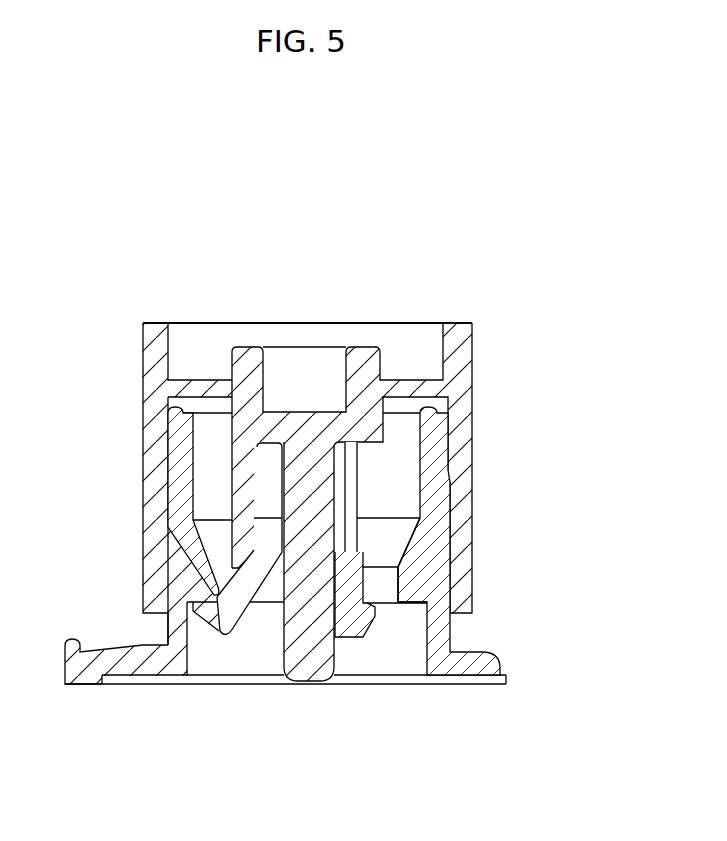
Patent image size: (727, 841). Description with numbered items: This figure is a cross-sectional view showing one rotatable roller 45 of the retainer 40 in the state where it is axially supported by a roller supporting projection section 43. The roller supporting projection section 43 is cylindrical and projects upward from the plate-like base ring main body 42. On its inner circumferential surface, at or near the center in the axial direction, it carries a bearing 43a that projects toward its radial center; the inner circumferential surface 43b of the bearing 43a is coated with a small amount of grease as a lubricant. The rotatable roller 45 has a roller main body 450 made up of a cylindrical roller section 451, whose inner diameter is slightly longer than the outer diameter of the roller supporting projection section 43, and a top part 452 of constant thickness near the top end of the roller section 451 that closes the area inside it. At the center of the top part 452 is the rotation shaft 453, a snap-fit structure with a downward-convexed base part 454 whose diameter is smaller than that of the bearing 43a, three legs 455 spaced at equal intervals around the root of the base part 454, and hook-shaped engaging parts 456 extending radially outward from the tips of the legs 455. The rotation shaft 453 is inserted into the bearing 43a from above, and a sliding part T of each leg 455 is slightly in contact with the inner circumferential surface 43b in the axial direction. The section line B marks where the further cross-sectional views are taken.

The retainer 40 is at (195, 677).
The base ring main body 42 is at (133, 686).
The roller supporting projection section 43 is at (370, 570).
The bearing 43a is at (409, 584).
The inner circumferential surface 43b is at (383, 582).
The rotatable roller 45 is at (290, 450).
The roller main body 450 is at (341, 446).
The roller section 451 is at (475, 319).
The top part 452 is at (423, 388).
The rotation shaft 453 is at (290, 616).
The base part 454 is at (300, 657).
The leg 455 is at (262, 600).
The engaging part 456 is at (393, 748).
The sliding part T is at (216, 595).
The line B- B is at (138, 598).